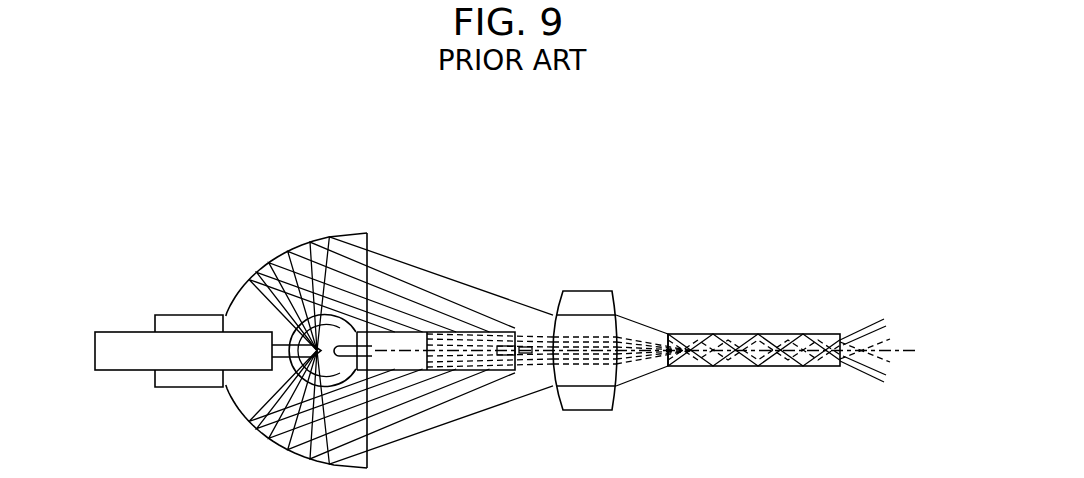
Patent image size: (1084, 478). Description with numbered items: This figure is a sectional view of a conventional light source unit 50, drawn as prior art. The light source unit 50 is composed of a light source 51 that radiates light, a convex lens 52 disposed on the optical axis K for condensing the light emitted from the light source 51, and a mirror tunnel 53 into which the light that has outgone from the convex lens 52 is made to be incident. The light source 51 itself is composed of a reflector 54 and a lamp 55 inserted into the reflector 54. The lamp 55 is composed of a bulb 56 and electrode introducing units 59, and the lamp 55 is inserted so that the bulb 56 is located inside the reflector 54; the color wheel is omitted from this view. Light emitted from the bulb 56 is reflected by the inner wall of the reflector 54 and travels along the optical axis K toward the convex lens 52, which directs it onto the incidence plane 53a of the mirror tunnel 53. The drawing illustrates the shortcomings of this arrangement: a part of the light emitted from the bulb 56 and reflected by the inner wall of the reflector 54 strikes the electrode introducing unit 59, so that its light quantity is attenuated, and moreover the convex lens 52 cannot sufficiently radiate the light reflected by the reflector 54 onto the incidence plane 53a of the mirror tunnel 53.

The light source unit 50 is at (588, 164).
The light source 51 is at (312, 200).
The convex lens 52 is at (578, 291).
The mirror tunnel 53 is at (783, 334).
The incidence plane 53a is at (668, 334).
The reflector 54 is at (342, 233).
The lamp 55 is at (270, 235).
The bulb 56 is at (372, 403).
The electrode introducing unit 59 is at (115, 332).
The optical axis K is at (397, 350).